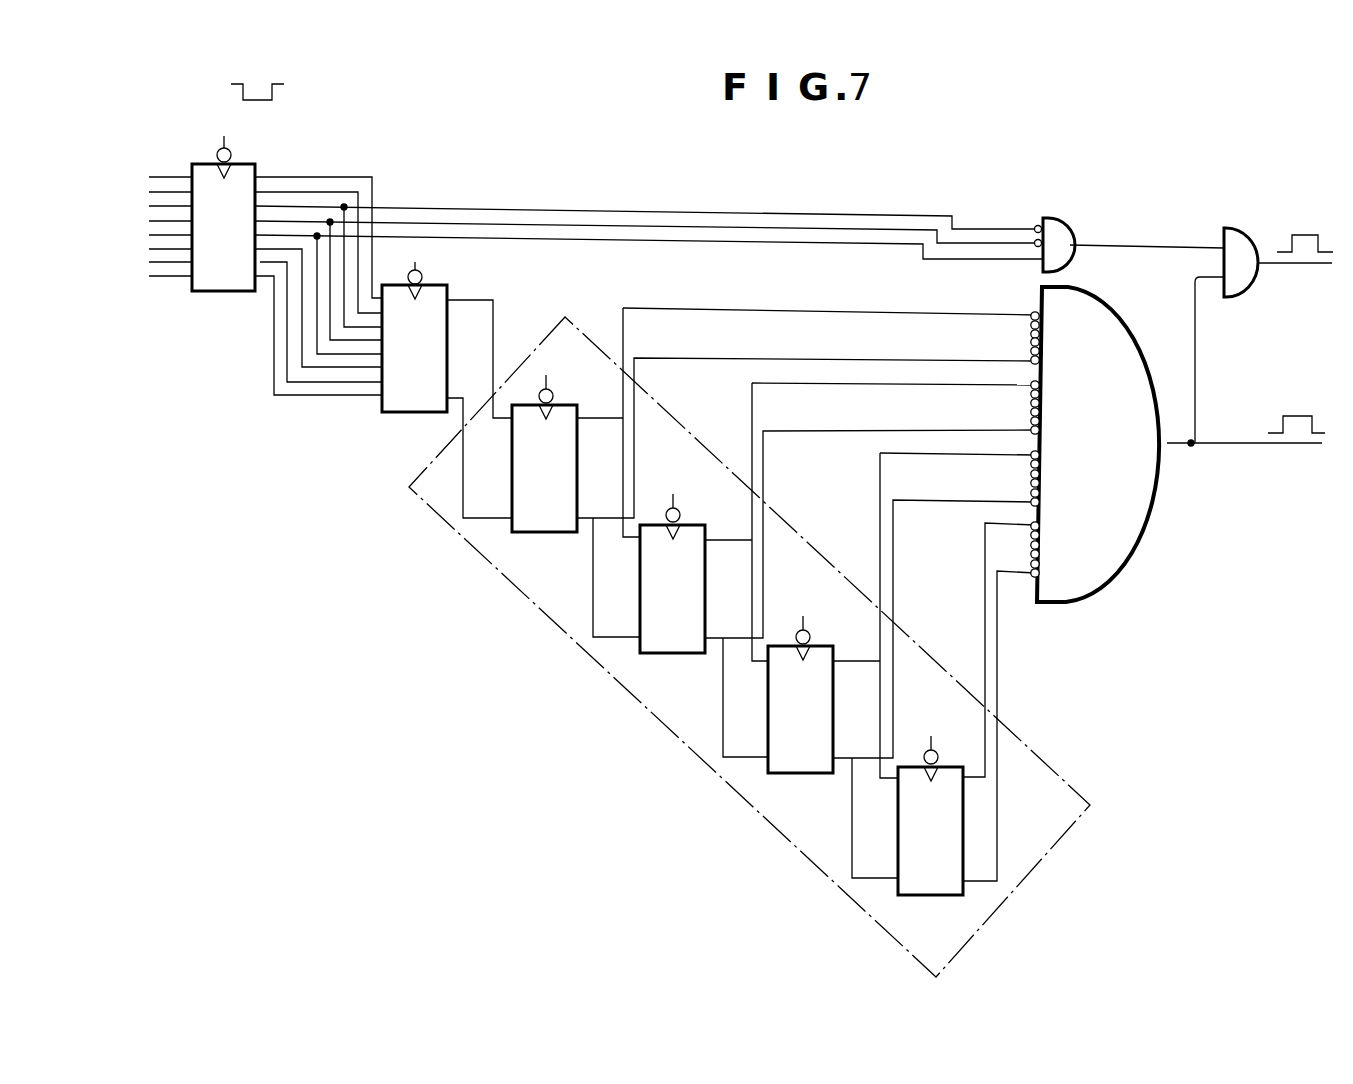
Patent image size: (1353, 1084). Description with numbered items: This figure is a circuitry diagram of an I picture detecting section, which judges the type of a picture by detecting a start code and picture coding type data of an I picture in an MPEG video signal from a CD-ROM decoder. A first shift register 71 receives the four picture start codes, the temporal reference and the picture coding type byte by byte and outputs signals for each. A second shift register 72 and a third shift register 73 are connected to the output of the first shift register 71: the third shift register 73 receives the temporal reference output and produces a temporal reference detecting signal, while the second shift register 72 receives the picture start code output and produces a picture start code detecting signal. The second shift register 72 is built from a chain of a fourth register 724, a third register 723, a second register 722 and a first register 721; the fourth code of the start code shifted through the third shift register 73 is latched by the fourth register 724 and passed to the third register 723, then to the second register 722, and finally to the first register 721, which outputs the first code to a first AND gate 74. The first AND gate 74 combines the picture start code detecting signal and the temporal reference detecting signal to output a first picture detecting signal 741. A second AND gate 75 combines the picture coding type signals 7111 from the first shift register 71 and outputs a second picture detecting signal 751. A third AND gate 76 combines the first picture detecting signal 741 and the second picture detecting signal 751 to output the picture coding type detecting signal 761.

The first shift register 71 is at (216, 291).
The picture coding type signals 7111 is at (857, 212).
The second shift register 72 is at (523, 592).
The first register 721 is at (963, 823).
The second register 722 is at (790, 773).
The third register 723 is at (659, 653).
The fourth register 724 is at (529, 532).
The third shift register 73 is at (378, 408).
The first AND gate 74 is at (1135, 560).
The first picture detecting signal 741 is at (1171, 447).
The second AND gate 75 is at (1062, 222).
The second picture detecting signal 751 is at (1150, 246).
The third AND gate 76 is at (1240, 228).
The picture coding type detecting signal 761 is at (1290, 266).